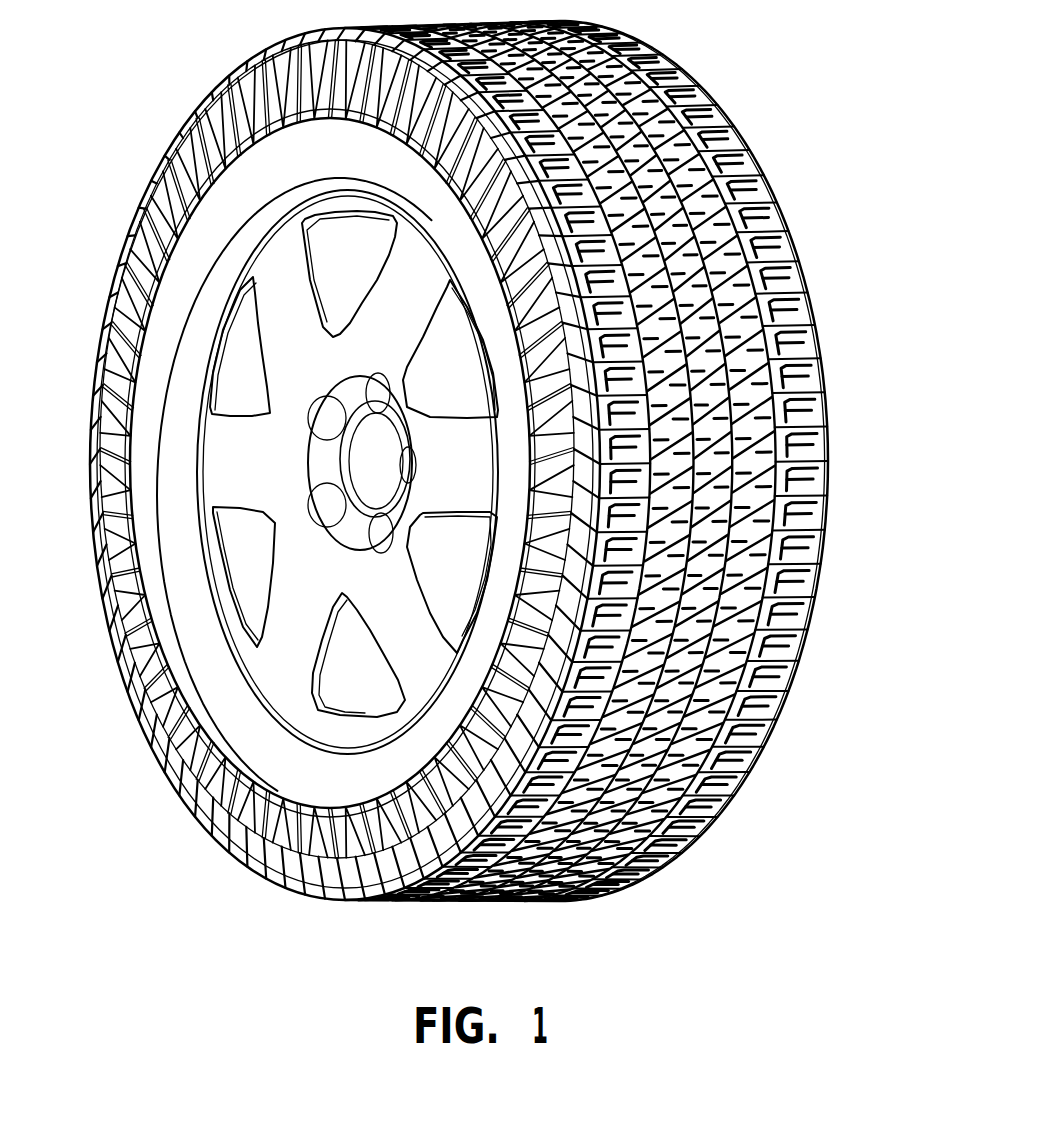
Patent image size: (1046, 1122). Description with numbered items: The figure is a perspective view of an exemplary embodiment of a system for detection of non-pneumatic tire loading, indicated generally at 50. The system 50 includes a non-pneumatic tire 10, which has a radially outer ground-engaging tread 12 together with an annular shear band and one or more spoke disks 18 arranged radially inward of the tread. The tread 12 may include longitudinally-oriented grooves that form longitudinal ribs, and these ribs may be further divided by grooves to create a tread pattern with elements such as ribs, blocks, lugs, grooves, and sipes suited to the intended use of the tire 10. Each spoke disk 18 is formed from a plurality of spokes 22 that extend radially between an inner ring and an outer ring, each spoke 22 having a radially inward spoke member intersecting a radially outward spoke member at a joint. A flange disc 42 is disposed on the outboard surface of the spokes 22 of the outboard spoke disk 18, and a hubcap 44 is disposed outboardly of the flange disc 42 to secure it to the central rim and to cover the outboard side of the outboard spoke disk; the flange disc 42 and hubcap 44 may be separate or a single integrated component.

The non-pneumatic tire 10 is at (720, 106).
The tread 12 is at (780, 228).
The spoke disk 18 is at (248, 86).
The spokes 22 is at (227, 128).
The flange disc 42 is at (135, 480).
The hubcap 44 is at (210, 435).
The system for detection of non-pneumatic tire loading 50 is at (189, 824).